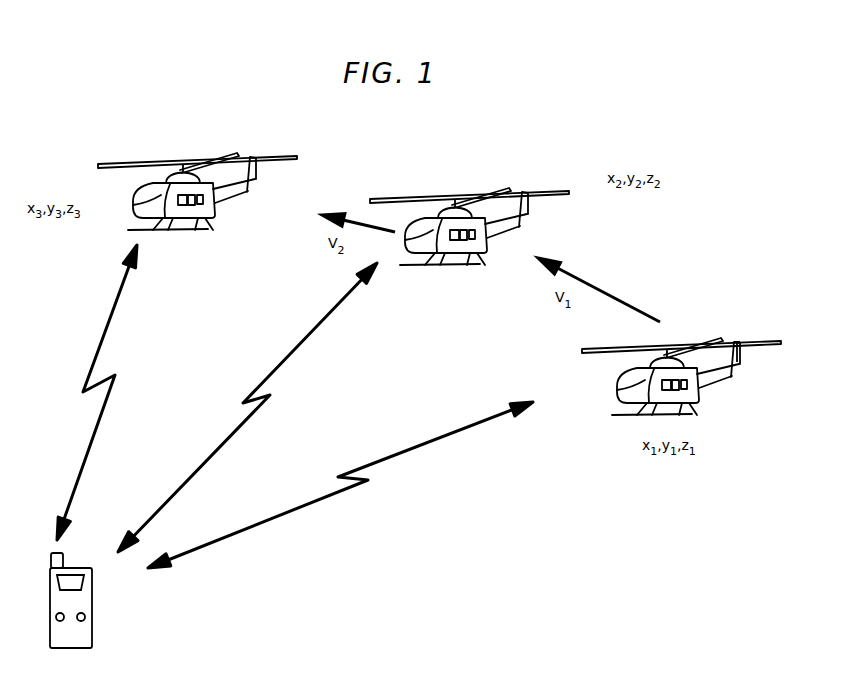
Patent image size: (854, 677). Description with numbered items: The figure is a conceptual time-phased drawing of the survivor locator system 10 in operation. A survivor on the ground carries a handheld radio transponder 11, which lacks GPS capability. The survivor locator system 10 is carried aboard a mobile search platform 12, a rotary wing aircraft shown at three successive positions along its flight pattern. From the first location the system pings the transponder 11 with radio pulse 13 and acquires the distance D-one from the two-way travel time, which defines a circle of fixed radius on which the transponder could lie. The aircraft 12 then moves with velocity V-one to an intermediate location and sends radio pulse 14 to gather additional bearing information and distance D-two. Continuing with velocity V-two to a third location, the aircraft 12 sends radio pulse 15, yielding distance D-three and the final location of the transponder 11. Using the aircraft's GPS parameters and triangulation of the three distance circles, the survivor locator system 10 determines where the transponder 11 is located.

The survivor locator system 10 is at (618, 397).
The handheld radio transponder 11 is at (92, 636).
The mobile search platform 12 is at (703, 337).
The radio pulse 13 is at (313, 503).
The radio pulse 14 is at (232, 432).
The radio pulse 15 is at (103, 413).